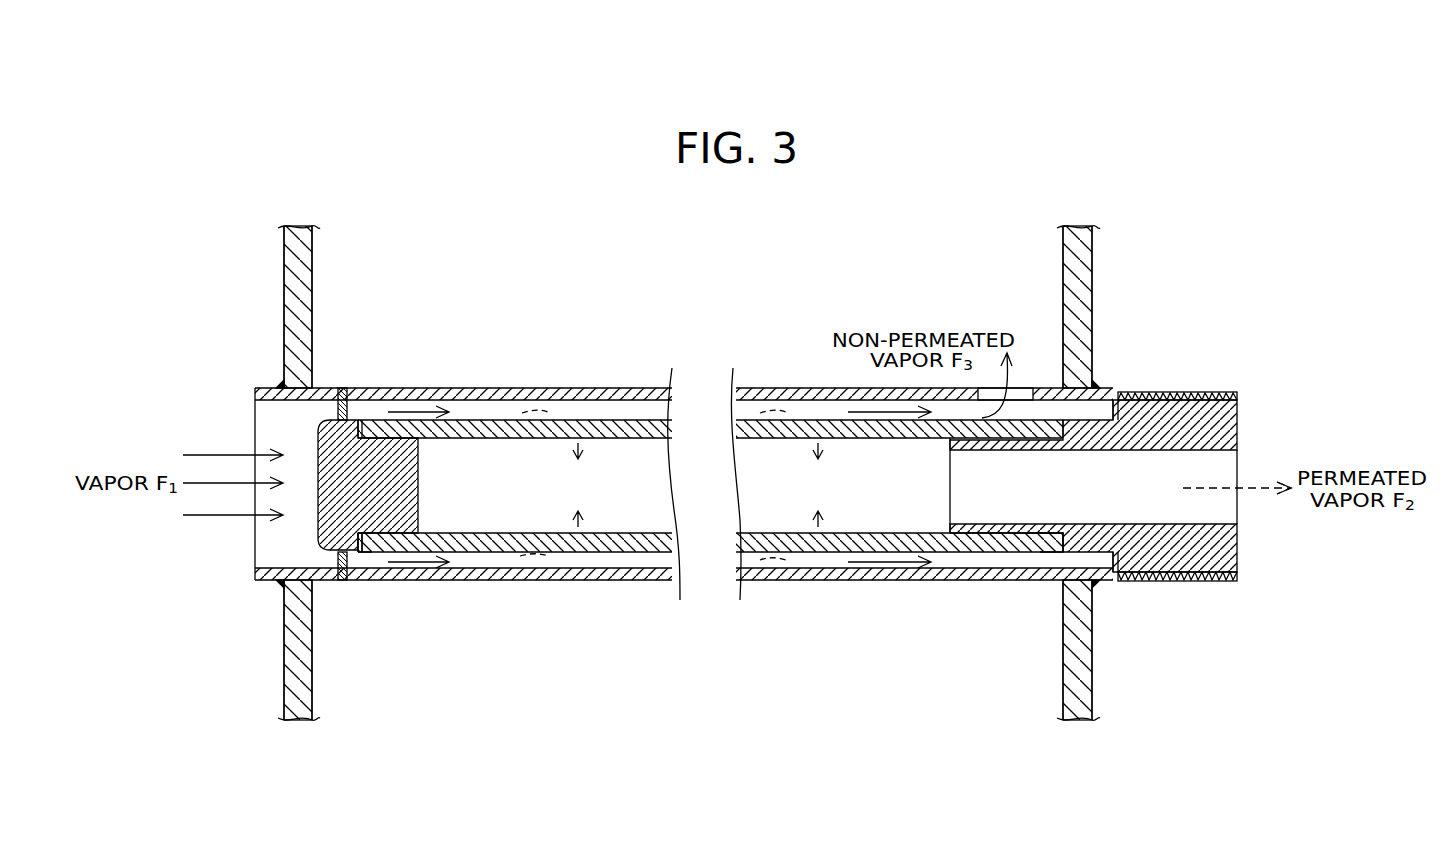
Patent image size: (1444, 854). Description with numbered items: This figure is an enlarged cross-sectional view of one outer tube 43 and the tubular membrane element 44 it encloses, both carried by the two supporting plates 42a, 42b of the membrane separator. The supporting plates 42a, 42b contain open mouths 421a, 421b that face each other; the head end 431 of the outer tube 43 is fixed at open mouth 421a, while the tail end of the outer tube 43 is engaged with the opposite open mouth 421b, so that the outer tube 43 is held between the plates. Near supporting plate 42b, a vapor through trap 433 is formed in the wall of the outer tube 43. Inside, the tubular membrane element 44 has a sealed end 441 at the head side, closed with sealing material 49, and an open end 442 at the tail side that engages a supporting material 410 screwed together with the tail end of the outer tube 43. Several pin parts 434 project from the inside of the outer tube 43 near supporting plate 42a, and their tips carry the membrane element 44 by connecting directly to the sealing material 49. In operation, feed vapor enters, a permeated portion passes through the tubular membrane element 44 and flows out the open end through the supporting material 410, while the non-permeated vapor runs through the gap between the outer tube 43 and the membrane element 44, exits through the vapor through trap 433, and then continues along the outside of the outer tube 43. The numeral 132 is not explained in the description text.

The supporting plate 42a is at (305, 275).
The open mouth 421a is at (293, 582).
The supporting plate 42b is at (1077, 278).
The open mouth 421b is at (1093, 600).
The outer tube 43 is at (779, 397).
The head end 431 is at (253, 372).
The pin part 434 is at (337, 555).
The vapor through trap 433 is at (1022, 397).
The tubular membrane element 44 is at (603, 428).
The sealed end 441 is at (362, 538).
The open end 442 is at (1057, 545).
The sealing material 49 is at (418, 505).
The supporting material 410 is at (1237, 424).
The permeated vapor pipe 132 is at (1238, 594).